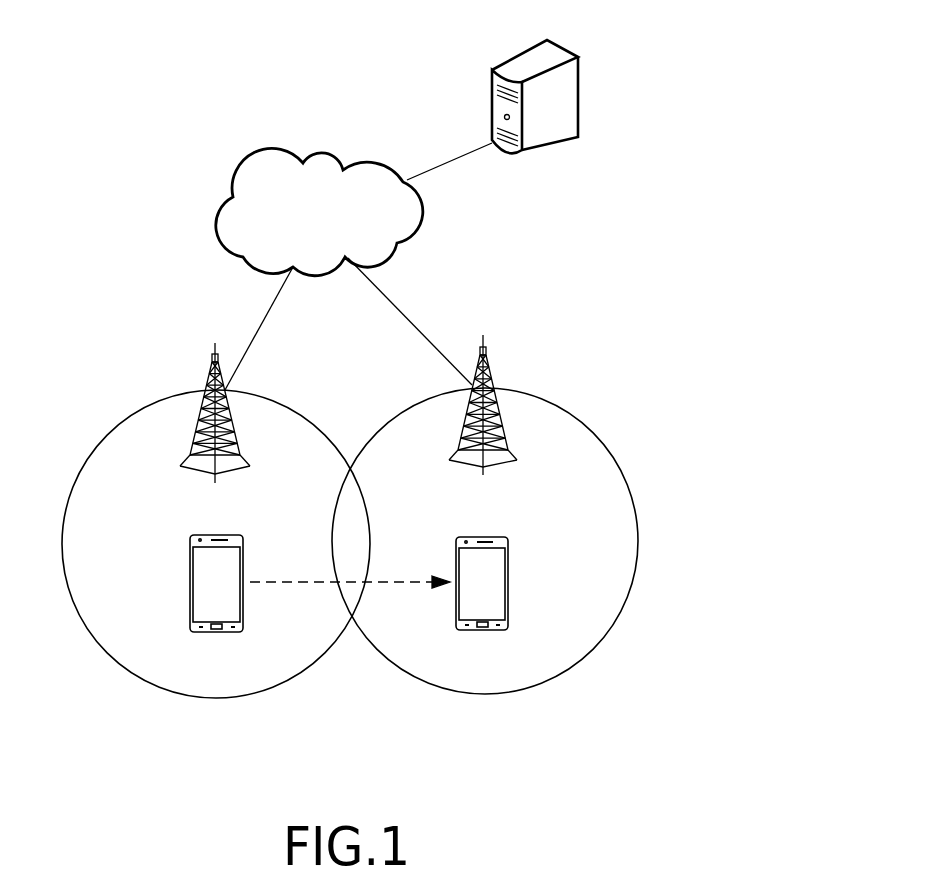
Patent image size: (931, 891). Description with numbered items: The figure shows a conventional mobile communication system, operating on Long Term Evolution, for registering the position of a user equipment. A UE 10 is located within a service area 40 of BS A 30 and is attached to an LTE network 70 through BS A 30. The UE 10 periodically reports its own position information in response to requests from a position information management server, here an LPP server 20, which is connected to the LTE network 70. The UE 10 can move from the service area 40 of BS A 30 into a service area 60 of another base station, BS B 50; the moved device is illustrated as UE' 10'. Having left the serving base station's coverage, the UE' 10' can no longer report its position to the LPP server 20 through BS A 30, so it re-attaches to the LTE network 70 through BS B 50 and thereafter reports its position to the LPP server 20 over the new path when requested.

The UE 10 is at (194, 599).
The UE' 10' is at (506, 597).
The LPP server 20 is at (565, 45).
The BS A 30 is at (214, 344).
The service area 40 is at (62, 546).
The BS B 50 is at (485, 339).
The service area 60 is at (638, 540).
The LTE network 70 is at (326, 154).